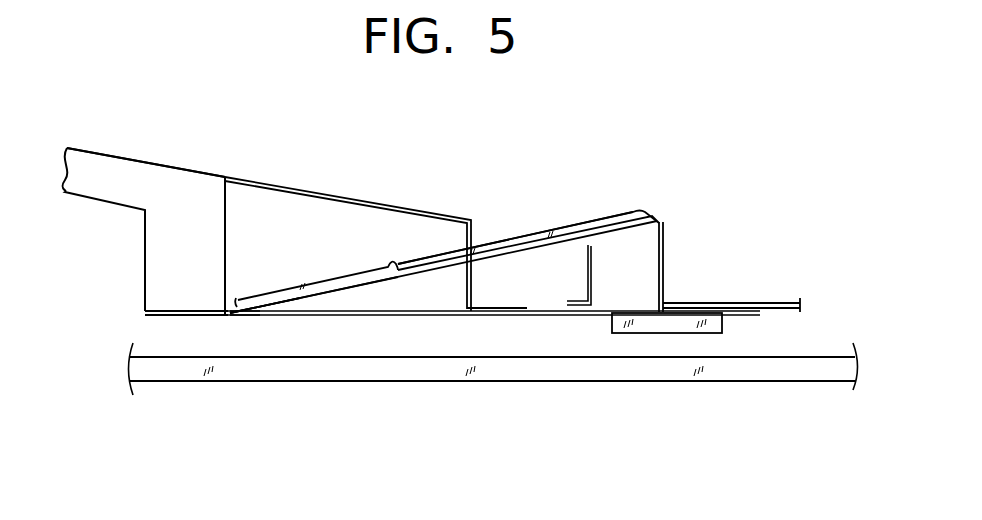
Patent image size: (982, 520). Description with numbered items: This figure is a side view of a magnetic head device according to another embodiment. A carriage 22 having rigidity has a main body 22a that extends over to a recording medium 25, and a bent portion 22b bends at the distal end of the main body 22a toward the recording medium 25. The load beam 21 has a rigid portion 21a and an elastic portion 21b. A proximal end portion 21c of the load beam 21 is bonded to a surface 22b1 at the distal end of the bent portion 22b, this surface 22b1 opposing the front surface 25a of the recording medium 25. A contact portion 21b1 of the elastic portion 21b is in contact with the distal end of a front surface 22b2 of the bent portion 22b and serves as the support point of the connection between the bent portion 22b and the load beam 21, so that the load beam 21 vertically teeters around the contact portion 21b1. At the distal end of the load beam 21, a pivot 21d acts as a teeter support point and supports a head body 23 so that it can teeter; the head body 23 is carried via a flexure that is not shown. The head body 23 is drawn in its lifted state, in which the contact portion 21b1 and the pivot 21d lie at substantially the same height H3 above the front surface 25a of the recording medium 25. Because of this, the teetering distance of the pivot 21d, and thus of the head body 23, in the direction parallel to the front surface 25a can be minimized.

The load beam 21 is at (628, 228).
The rigid portion 21a is at (523, 226).
The elastic portion 21b is at (300, 195).
The contact portion 21b1 is at (245, 318).
The proximal end portion 21c is at (167, 318).
The pivot 21d is at (672, 305).
The carriage 22 is at (181, 160).
The main body 22a is at (100, 156).
The bent portion 22b is at (202, 213).
The surface 22b1 is at (180, 303).
The front surface 22b2 is at (300, 193).
The head body 23 is at (640, 325).
The recording medium 25 is at (817, 372).
The front surface 25a is at (814, 348).
The height H3 is at (552, 318).